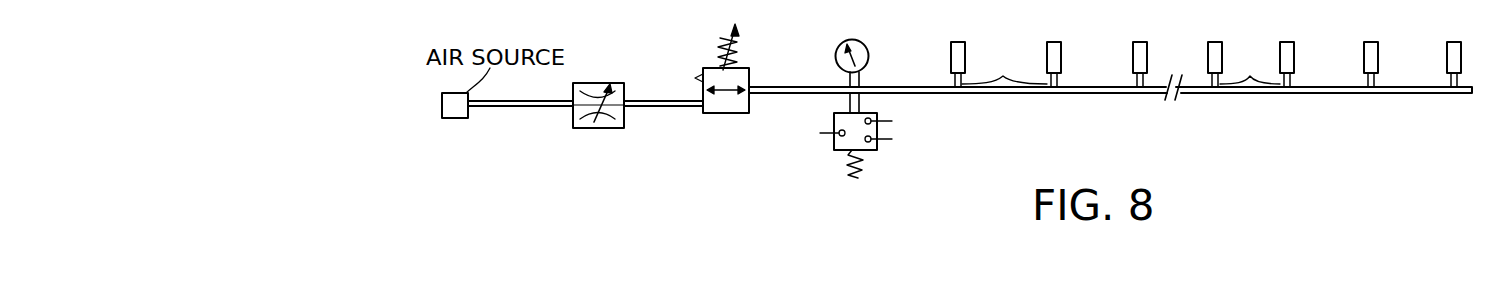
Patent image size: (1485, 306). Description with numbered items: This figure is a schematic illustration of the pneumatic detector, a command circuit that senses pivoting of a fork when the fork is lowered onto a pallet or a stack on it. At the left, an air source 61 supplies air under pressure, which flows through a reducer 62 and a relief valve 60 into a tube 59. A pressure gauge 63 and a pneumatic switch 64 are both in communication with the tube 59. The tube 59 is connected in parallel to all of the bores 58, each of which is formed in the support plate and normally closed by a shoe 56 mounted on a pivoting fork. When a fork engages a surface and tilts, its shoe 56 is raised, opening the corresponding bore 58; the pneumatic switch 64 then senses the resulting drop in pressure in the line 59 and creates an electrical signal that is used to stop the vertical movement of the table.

The shoe 56 is at (1047, 50).
The bore 58 is at (1121, 69).
The tube 59 is at (788, 93).
The relief valve 60 is at (728, 113).
The air source 61 is at (455, 118).
The reducer 62 is at (600, 128).
The pressure gauge 63 is at (868, 50).
The pneumatic switch 64 is at (843, 152).